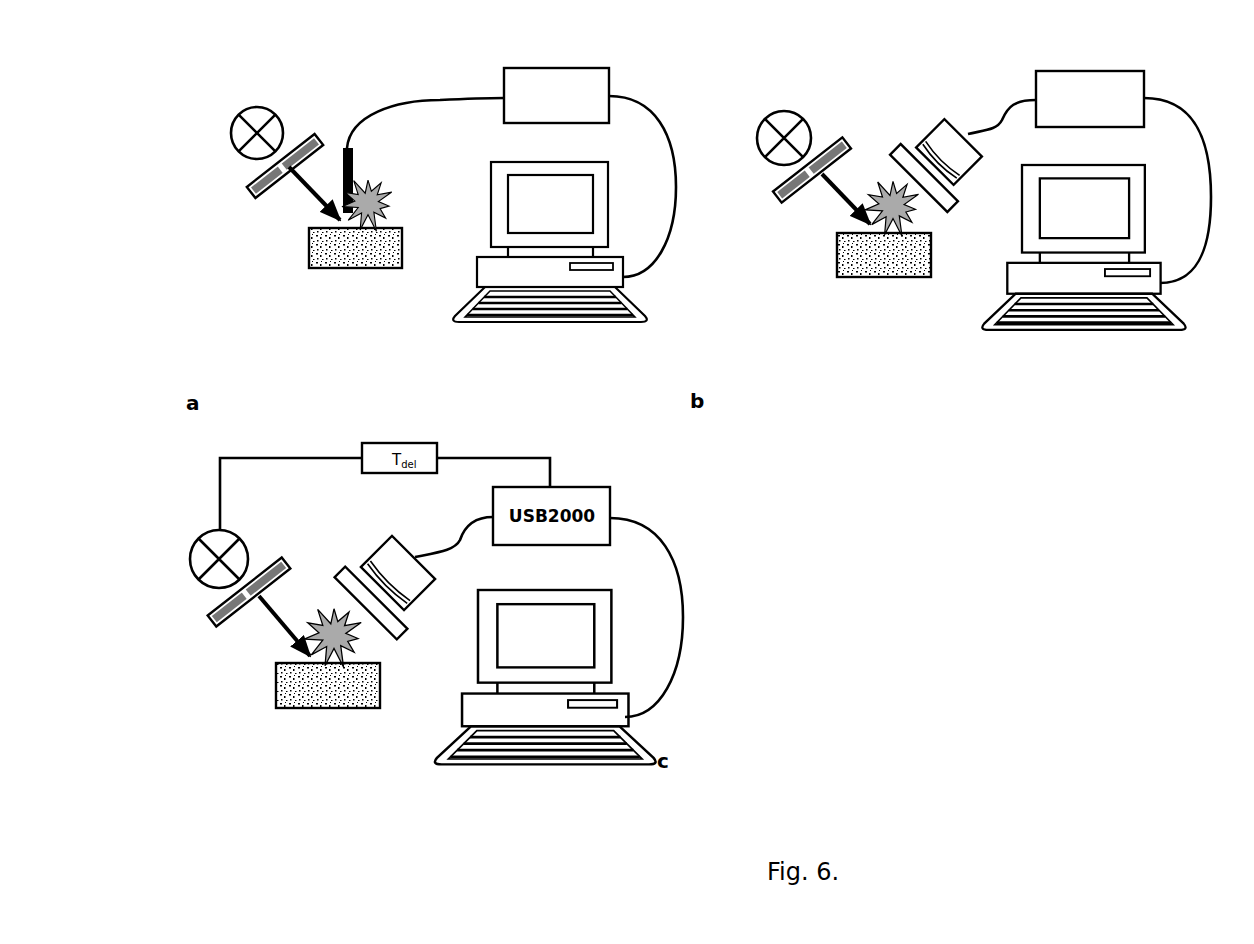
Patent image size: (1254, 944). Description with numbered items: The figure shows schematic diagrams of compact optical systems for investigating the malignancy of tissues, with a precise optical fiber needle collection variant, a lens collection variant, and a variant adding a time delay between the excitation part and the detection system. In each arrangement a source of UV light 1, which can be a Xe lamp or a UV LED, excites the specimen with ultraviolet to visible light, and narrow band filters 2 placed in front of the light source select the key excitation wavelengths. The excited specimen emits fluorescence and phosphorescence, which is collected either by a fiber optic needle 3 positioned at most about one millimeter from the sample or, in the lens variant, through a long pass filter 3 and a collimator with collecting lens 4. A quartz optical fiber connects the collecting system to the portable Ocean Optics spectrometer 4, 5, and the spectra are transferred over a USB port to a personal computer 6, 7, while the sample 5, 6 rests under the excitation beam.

The source of UV light 1 is at (270, 105).
The narrow band filter 2 is at (312, 123).
The optical fiber probe / optical filter 3 is at (353, 125).
The USB2000 spectrometer / collecting lens detector 4 is at (530, 66).
The sample / USB2000 spectrometer 5 is at (332, 273).
The computer / sample 6 is at (550, 324).
The computer 7 is at (1085, 330).